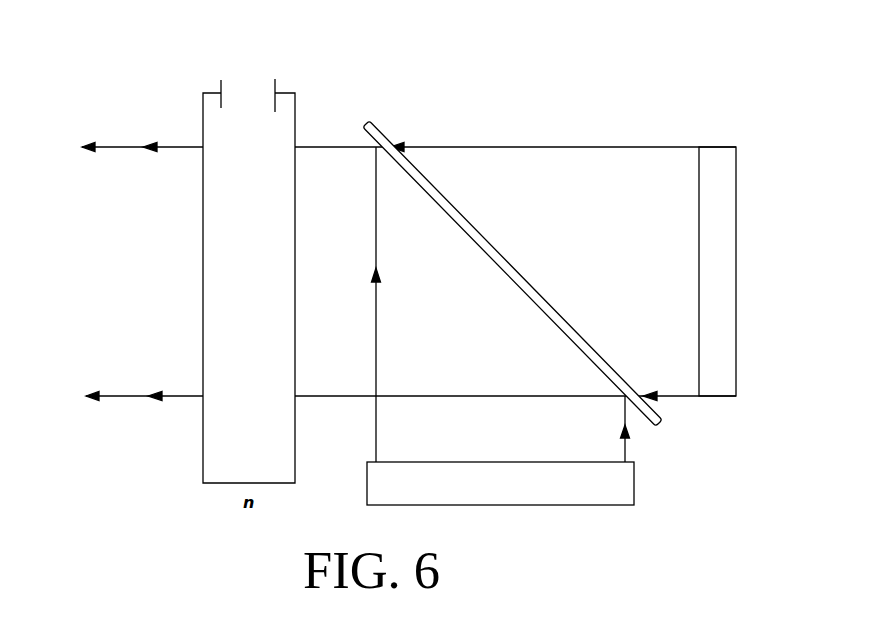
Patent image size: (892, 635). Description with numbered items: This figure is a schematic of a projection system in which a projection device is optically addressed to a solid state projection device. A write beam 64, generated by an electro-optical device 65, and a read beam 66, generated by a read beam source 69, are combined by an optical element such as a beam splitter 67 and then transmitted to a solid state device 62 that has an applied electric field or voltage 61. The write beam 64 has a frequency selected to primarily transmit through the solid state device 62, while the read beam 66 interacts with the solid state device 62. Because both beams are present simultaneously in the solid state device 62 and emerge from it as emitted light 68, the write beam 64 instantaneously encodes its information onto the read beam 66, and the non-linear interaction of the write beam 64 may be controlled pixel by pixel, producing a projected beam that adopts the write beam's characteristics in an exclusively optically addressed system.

The applied electric field or voltage 61 is at (260, 76).
The solid state device 62 is at (202, 112).
The write beam 64 is at (377, 420).
The electro-optical device 65 is at (635, 481).
The read beam 66 is at (660, 147).
The beam splitter 67 is at (460, 222).
The emitted light 68 is at (113, 147).
The read beam source 69 is at (737, 323).